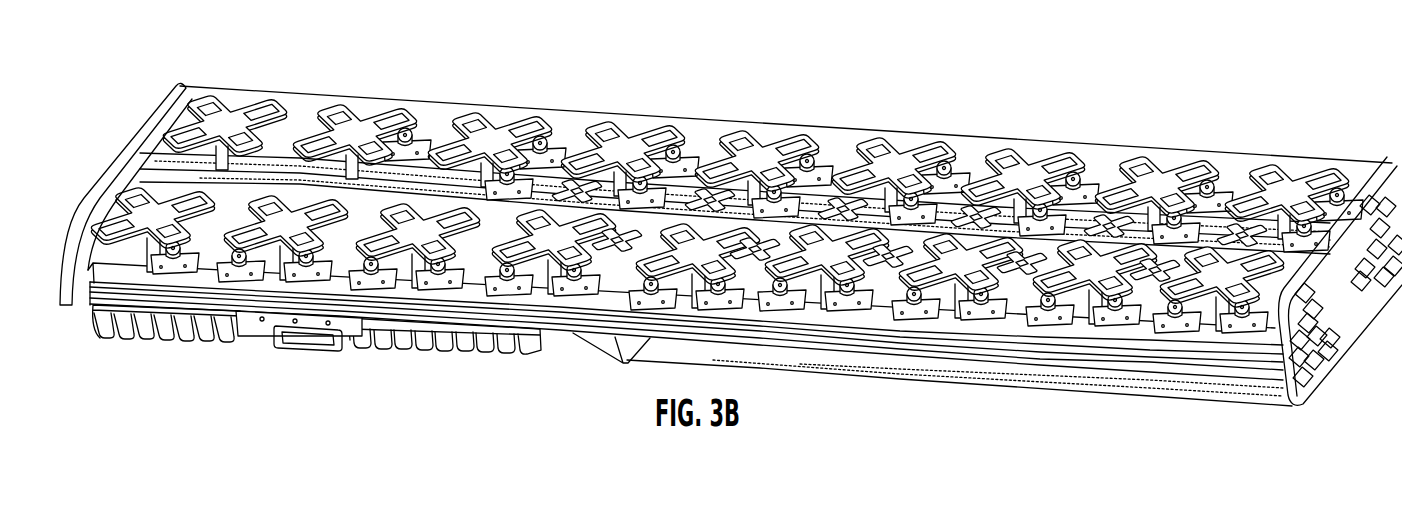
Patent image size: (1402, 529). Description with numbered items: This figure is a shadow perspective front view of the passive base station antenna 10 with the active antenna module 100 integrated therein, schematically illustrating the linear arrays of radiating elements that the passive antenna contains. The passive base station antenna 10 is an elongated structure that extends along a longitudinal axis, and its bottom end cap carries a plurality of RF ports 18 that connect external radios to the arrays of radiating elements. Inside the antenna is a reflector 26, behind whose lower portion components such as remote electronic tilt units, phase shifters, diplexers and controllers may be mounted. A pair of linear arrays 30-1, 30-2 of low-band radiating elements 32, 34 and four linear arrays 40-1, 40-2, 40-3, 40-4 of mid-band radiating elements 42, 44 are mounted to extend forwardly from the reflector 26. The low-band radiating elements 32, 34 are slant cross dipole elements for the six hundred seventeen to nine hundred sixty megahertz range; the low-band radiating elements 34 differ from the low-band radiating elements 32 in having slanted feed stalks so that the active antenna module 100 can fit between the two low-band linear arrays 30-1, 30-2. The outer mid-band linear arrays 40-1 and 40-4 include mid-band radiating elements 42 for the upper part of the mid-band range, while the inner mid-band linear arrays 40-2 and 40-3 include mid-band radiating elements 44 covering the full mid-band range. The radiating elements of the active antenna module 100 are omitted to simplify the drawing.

The passive base station antenna 10 is at (726, 218).
The RF ports 18 is at (1310, 380).
The reflector 26 is at (1007, 245).
The linear array 30-1 is at (109, 209).
The linear array 30-2 is at (164, 125).
The low-band radiating element 32 is at (930, 148).
The low-band radiating element 34 is at (277, 97).
The mid-band linear array 40-1 is at (107, 269).
The mid-band linear array 40-2 is at (511, 231).
The mid-band linear array 40-3 is at (606, 192).
The mid-band linear array 40-4 is at (181, 97).
The mid-band radiating element 42 is at (783, 307).
The mid-band radiating element 44 is at (713, 196).
The active antenna module 100 is at (209, 358).